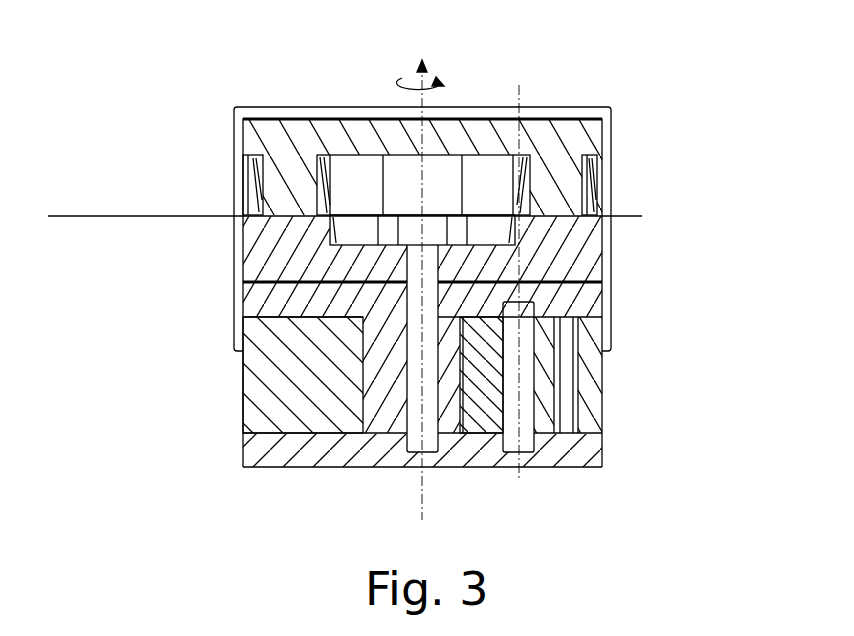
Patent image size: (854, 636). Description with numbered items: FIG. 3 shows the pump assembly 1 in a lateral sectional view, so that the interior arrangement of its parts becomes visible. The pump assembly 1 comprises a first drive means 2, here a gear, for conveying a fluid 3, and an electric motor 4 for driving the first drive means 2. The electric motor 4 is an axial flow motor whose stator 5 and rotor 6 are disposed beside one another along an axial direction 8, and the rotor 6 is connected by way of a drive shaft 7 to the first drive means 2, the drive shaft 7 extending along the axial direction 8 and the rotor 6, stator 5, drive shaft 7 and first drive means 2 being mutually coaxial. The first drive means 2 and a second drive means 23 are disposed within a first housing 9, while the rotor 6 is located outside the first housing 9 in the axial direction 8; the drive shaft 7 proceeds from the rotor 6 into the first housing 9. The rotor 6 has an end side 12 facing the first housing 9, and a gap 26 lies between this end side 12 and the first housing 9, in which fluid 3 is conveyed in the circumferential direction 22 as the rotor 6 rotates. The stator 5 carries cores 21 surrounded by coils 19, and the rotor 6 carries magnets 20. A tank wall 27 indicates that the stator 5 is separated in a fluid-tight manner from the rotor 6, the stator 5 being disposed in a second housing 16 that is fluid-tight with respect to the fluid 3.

The pump assembly 1 is at (489, 89).
The first drive means 2 is at (392, 428).
The fluid 3 is at (468, 422).
The electric motor 4 is at (232, 142).
The stator 5 is at (571, 164).
The rotor 6 is at (286, 256).
The drive shaft 7 is at (428, 444).
The axial direction 8 is at (415, 76).
The first housing 9 is at (292, 302).
The end side 12 is at (305, 318).
The second housing 16 is at (525, 107).
The coils 19 is at (248, 181).
The magnets 20 is at (282, 226).
The cores 21 is at (549, 183).
The circumferential direction 22 is at (446, 77).
The second drive means 23 is at (548, 389).
The gap 26 is at (260, 282).
The tank wall 27 is at (345, 200).